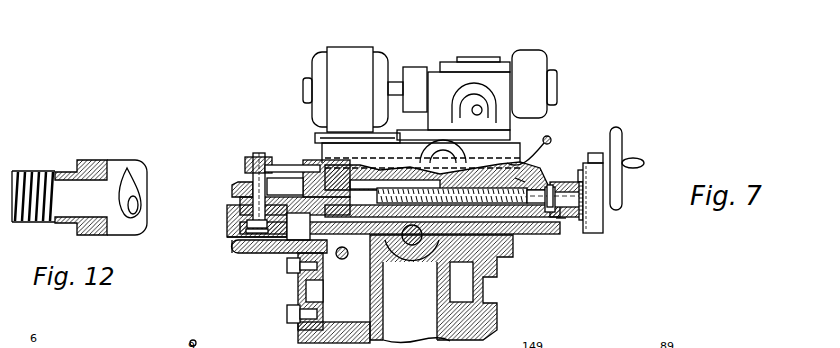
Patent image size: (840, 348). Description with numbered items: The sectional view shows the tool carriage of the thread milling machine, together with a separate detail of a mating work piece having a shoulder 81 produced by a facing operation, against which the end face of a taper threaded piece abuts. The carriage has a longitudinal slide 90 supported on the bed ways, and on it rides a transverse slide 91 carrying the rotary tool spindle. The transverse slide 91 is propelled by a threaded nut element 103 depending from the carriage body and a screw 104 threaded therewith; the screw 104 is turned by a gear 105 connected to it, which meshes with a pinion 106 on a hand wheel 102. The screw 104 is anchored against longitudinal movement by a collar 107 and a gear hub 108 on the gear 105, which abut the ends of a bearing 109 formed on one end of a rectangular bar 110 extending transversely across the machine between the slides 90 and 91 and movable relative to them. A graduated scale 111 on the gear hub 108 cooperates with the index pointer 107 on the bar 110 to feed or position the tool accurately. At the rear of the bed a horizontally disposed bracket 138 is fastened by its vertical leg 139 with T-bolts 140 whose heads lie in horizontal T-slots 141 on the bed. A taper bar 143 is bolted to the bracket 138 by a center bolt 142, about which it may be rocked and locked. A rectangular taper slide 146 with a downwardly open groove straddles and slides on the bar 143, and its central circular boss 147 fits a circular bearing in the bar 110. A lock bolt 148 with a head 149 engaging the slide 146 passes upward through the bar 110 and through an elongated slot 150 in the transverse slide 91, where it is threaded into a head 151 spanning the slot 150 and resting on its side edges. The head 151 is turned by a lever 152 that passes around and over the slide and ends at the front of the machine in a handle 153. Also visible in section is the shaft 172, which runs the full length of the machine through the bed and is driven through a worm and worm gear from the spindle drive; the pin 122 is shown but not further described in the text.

In FIG. 12, the shoulder 81 is at (90, 160).
In FIG. 7, the lever 152 is at (318, 168).
In FIG. 7, the transverse slide 91 is at (320, 172).
In FIG. 7, the threaded nut element 103 is at (520, 180).
In FIG. 7, the screw 104 is at (540, 227).
In FIG. 7, the elongated slot 150 is at (283, 170).
In FIG. 7, the lock bolt 148 is at (238, 183).
In FIG. 7, the circular boss 147 is at (228, 205).
In FIG. 7, the rectangular taper slide 146 is at (229, 222).
In FIG. 7, the head 149 is at (246, 230).
In FIG. 7, the taper bar 143 is at (230, 237).
In FIG. 7, the head 151 is at (255, 155).
In FIG. 7, the rectangular bar 110 is at (296, 175).
In FIG. 7, the bearing 109 is at (572, 217).
In FIG. 7, the collar 107 is at (553, 183).
In FIG. 7, the gear hub 108 is at (580, 170).
In FIG. 7, the graduated scale 111 is at (582, 222).
In FIG. 7, the gear 105 is at (595, 233).
In FIG. 7, the pinion 106 is at (600, 153).
In FIG. 7, the hand wheel 102 is at (622, 132).
In FIG. 7, the handle 153 is at (549, 137).
In FIG. 7, the pivot pin 122 is at (412, 246).
In FIG. 7, the center bolt 142 is at (258, 254).
In FIG. 7, the bracket 138 is at (232, 251).
In FIG. 7, the vertical leg 139 is at (297, 288).
In FIG. 7, the T-slots 141 is at (322, 332).
In FIG. 7, the longitudinal slide 90 is at (318, 266).
In FIG. 7, the T-bolts 140 is at (287, 314).
In FIG. 7, the shaft 172 is at (345, 258).